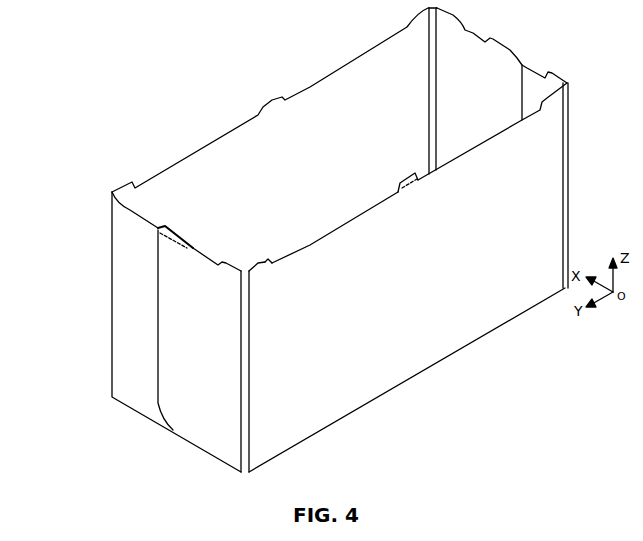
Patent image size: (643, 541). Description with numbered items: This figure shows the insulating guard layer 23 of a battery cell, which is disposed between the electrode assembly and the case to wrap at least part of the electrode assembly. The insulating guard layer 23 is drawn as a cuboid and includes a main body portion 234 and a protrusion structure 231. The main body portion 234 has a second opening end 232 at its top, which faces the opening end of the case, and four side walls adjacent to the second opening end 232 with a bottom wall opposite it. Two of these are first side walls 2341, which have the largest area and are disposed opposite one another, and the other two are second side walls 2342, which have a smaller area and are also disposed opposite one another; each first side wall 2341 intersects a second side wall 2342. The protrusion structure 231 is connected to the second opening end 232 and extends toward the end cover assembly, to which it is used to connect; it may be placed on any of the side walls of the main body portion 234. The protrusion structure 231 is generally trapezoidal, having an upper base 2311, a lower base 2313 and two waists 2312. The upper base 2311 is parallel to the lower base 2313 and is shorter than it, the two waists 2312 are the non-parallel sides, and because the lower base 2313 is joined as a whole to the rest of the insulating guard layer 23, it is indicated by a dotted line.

The insulating guard layer 23 is at (142, 101).
The protrusion structure 231 is at (158, 243).
The upper base 2311 is at (166, 228).
The waist 2312 is at (190, 247).
The lower base 2313 is at (178, 249).
The second opening end 232 is at (375, 105).
The main body portion 234 is at (50, 302).
The first side wall 2341 is at (293, 327).
The second side wall 2342 is at (143, 310).